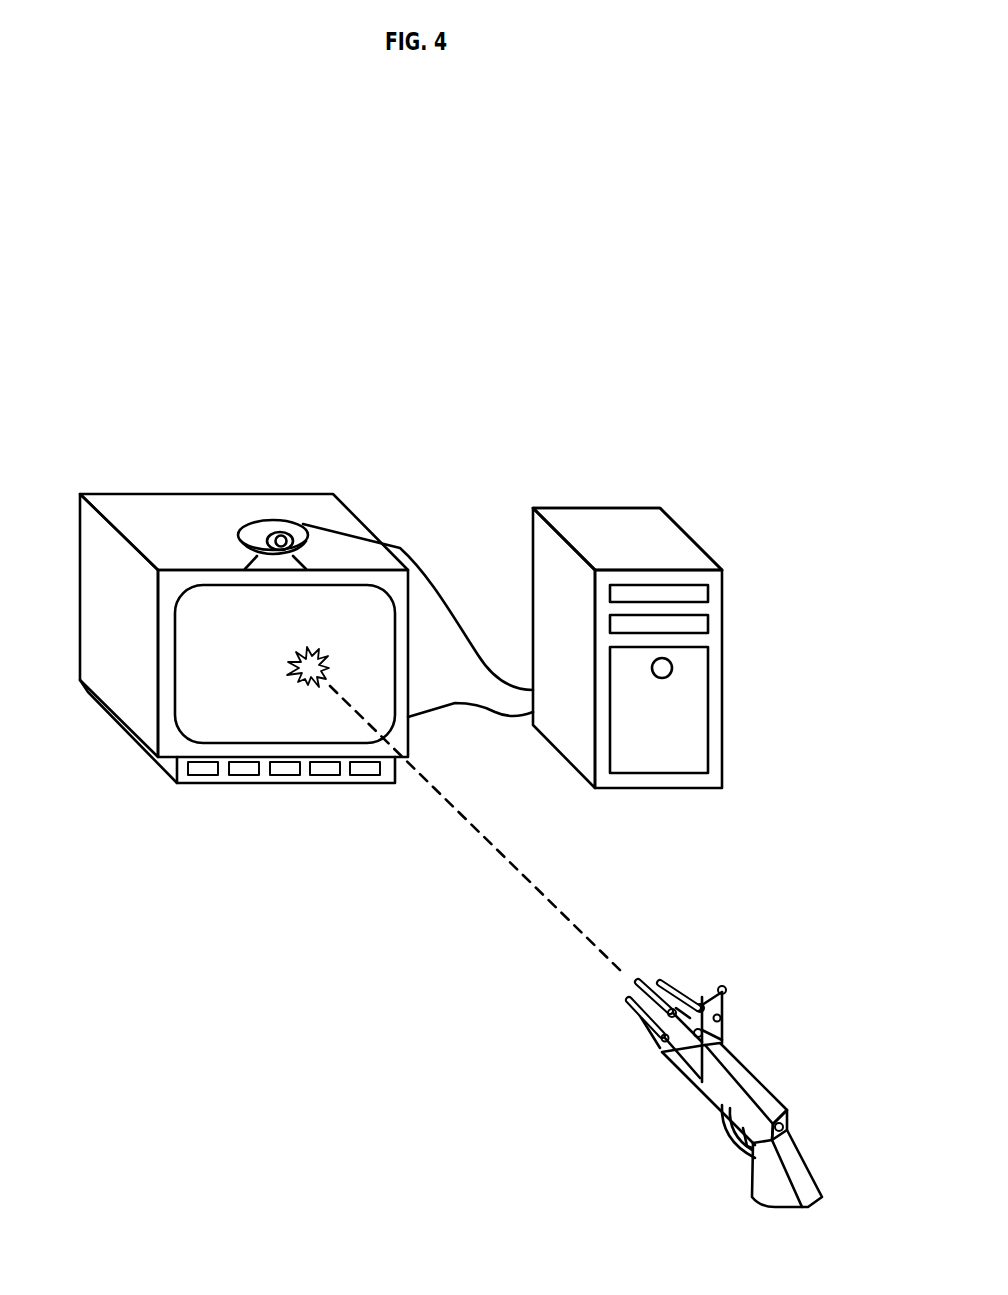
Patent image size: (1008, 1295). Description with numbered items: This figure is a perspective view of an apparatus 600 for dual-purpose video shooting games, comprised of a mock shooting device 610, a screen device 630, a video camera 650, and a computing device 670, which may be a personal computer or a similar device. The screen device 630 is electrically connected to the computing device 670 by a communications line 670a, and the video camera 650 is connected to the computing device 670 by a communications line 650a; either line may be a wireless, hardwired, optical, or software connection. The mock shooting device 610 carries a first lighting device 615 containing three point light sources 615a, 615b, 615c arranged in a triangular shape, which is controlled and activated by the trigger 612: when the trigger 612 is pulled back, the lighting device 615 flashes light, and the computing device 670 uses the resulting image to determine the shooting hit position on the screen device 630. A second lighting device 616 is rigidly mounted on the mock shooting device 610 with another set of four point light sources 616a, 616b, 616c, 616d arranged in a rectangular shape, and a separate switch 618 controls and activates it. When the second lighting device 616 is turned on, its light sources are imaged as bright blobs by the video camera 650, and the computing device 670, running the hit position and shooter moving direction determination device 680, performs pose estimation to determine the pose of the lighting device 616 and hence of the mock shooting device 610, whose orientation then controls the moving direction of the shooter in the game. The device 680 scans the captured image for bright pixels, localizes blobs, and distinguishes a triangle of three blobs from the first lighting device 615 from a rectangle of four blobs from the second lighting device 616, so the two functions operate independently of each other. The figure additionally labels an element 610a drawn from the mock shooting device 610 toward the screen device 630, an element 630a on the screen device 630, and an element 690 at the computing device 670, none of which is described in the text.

The apparatus 600 is at (505, 375).
The mock shooting device 610 is at (722, 1108).
The line of sight 610a is at (488, 868).
The trigger 612 is at (722, 1145).
The first lighting device 615 is at (628, 1025).
The point light source 615a is at (615, 985).
The point light source 615b is at (632, 980).
The point light source 615c is at (660, 985).
The second lighting device 616 is at (683, 1065).
The point light source 616a is at (705, 992).
The point light source 616b is at (727, 987).
The point light source 616c is at (725, 1015).
The point light source 616d is at (722, 1043).
The switch 618 is at (798, 1128).
The screen device 630 is at (132, 702).
The display screen 630a is at (227, 725).
The video camera 650 is at (270, 516).
The communications line 650a is at (445, 588).
The computing device 670 is at (687, 723).
The communications line 670a is at (458, 710).
The hit position and shooter moving direction determination device 680 is at (592, 535).
The memory 690 is at (652, 542).